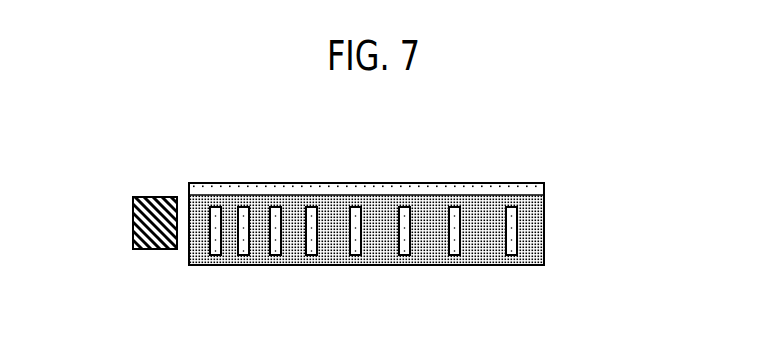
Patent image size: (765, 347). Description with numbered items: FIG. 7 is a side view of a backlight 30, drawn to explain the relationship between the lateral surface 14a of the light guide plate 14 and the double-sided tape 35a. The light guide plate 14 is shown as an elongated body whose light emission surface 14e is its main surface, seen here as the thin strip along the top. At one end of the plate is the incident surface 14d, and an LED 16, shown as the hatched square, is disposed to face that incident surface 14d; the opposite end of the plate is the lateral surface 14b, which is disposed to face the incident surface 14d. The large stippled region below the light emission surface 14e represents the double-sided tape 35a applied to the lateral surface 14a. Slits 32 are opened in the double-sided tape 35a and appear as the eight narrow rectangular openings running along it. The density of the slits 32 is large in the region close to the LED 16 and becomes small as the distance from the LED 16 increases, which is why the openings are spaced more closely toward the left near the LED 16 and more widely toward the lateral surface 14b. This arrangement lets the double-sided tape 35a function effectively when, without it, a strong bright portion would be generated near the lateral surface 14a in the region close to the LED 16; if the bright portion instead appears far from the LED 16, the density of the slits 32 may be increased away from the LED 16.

The backlight 30 is at (573, 162).
The light guide plate 14 is at (459, 166).
The lateral surface 14a is at (358, 192).
The lateral surface 14b is at (544, 197).
The incident surface 14d is at (189, 190).
The light emission surface 14e is at (271, 183).
The LED 16 is at (133, 225).
The slits 32 is at (355, 256).
The double-sided tape 35a is at (544, 236).